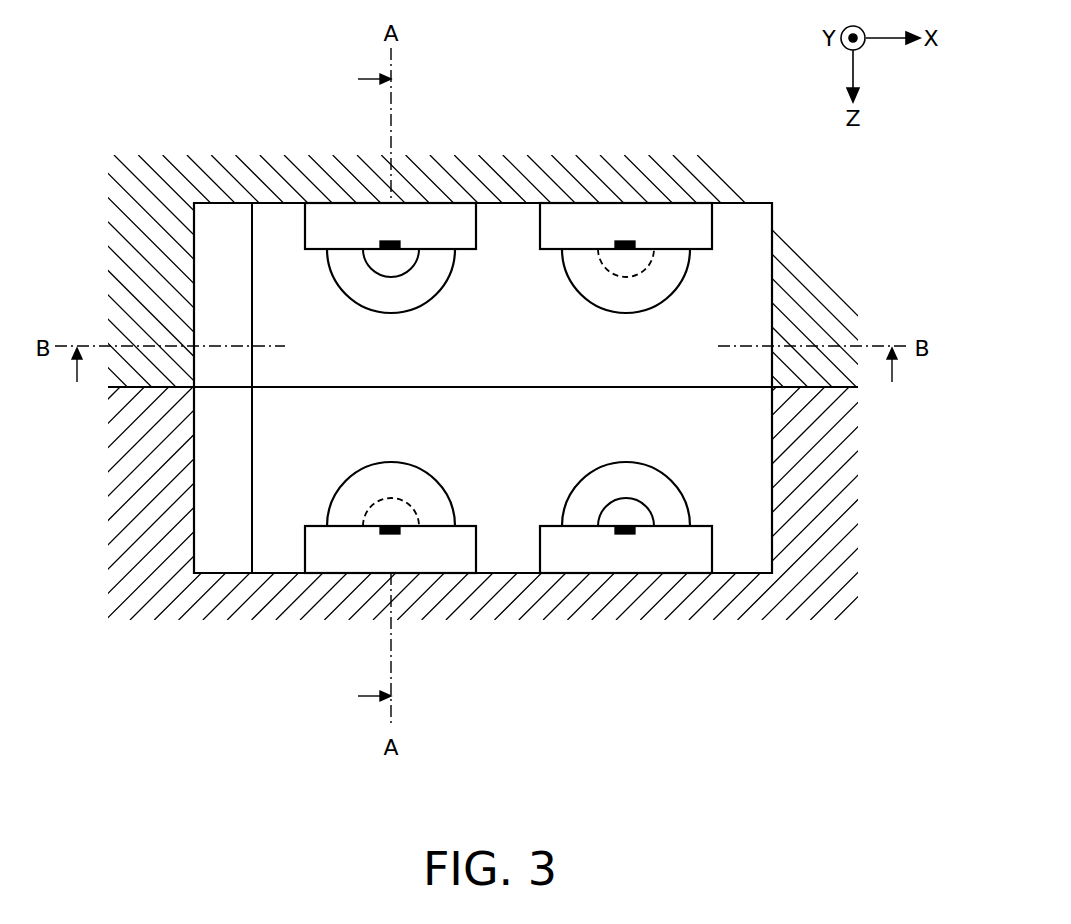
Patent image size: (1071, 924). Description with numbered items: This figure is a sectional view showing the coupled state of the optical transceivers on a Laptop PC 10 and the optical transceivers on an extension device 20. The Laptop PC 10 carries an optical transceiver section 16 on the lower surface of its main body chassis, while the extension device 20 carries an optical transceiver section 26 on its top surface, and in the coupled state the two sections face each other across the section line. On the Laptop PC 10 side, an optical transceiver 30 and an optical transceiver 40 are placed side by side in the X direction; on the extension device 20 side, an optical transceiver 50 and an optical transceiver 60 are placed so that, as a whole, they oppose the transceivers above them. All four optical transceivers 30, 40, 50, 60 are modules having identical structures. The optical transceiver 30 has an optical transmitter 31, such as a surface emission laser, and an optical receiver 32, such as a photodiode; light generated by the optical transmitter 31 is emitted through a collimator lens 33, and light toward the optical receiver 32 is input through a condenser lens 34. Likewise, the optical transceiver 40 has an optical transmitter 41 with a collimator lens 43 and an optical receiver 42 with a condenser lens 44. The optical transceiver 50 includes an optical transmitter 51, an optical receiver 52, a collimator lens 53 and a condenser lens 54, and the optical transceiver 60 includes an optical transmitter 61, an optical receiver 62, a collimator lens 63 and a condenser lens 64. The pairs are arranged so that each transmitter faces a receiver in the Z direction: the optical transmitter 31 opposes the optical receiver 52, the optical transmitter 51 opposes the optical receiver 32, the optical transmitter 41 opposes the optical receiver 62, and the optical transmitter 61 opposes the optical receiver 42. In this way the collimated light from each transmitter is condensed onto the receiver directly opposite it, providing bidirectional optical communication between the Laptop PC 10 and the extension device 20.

The Laptop PC 10 is at (843, 238).
The optical transceiver section 16 is at (752, 203).
The extension device 20 is at (843, 500).
The optical transceiver section 26 is at (738, 573).
The optical transceiver 30 is at (626, 235).
The optical transmitter 31 is at (589, 175).
The optical receiver 32 is at (626, 241).
The collimator lens 33 is at (610, 277).
The condenser lens 34 is at (626, 313).
The optical transceiver 40 is at (390, 235).
The optical transmitter 41 is at (352, 175).
The optical receiver 42 is at (388, 241).
The collimator lens 43 is at (405, 277).
The condenser lens 44 is at (388, 313).
The optical transceiver 50 is at (626, 540).
The optical transmitter 51 is at (648, 600).
The optical receiver 52 is at (627, 534).
The collimator lens 53 is at (612, 500).
The condenser lens 54 is at (626, 462).
The optical transceiver 60 is at (378, 541).
The optical transmitter 61 is at (340, 600).
The optical receiver 62 is at (390, 534).
The collimator lens 63 is at (400, 503).
The condenser lens 64 is at (391, 462).